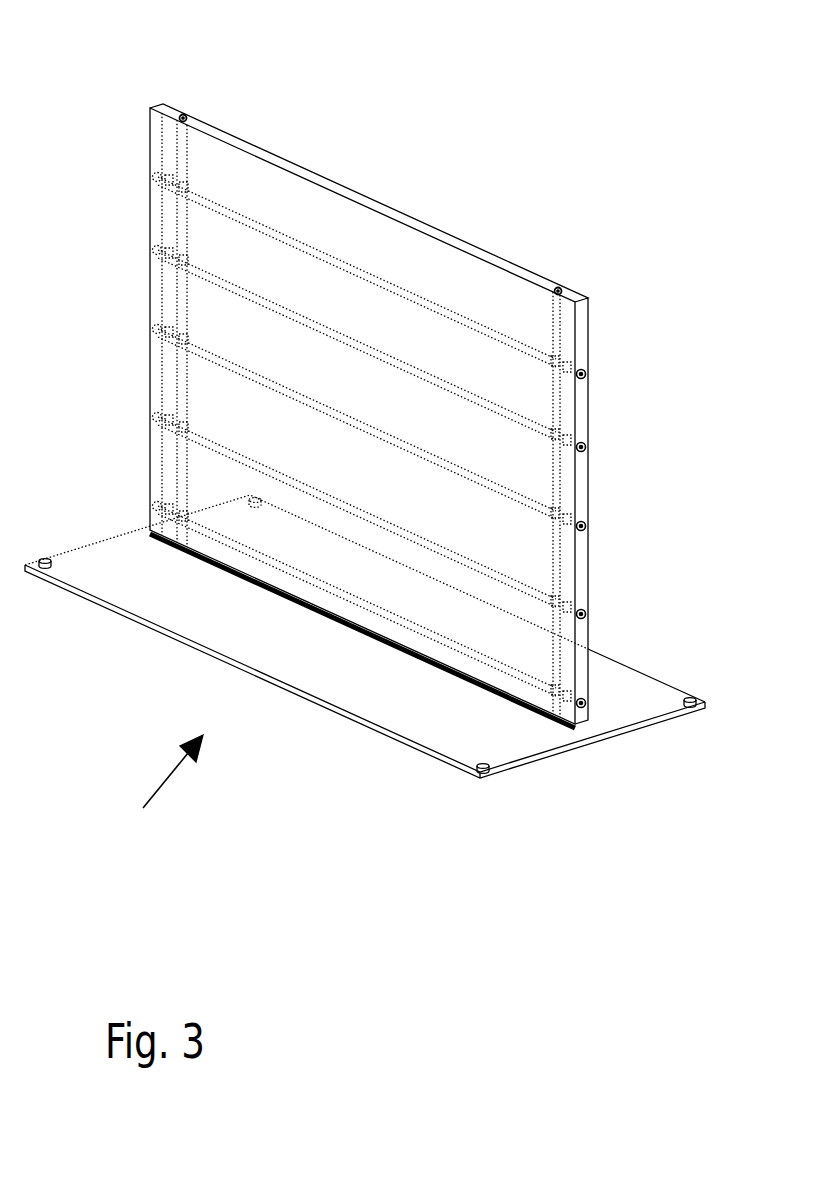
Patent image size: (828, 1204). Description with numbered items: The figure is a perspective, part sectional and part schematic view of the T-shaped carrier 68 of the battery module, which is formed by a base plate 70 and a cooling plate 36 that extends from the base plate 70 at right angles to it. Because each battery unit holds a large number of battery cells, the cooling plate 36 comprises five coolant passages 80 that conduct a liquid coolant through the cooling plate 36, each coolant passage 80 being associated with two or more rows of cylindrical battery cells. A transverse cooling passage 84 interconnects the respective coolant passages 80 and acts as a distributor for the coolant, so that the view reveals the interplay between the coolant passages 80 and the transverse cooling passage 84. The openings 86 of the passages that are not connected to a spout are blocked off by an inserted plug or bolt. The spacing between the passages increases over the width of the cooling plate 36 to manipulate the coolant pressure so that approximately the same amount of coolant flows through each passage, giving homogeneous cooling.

The cooling plate 36 is at (345, 227).
The T-shaped carrier 68 is at (158, 790).
The base plate 70 is at (535, 760).
The coolant passages 80 is at (455, 392).
The transverse cooling passage 84 is at (182, 165).
The openings 86 is at (185, 118).